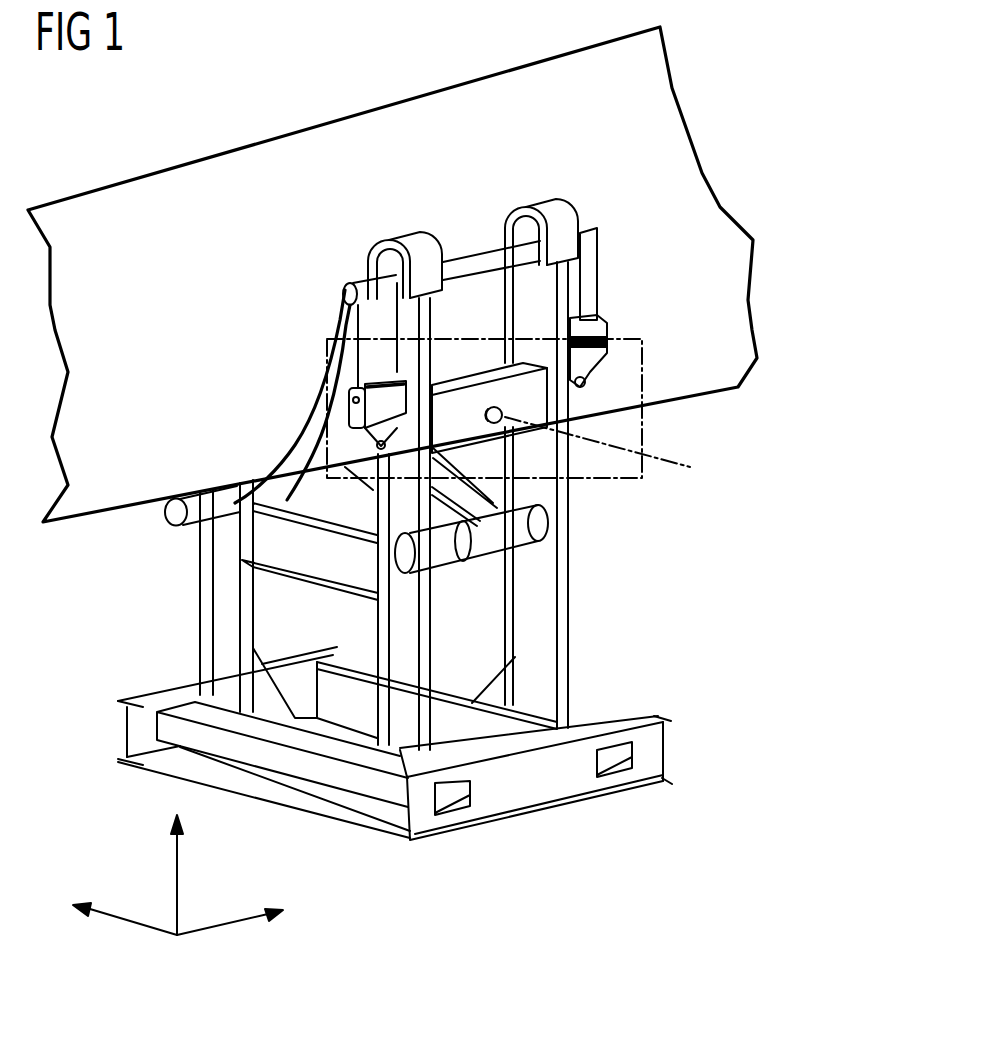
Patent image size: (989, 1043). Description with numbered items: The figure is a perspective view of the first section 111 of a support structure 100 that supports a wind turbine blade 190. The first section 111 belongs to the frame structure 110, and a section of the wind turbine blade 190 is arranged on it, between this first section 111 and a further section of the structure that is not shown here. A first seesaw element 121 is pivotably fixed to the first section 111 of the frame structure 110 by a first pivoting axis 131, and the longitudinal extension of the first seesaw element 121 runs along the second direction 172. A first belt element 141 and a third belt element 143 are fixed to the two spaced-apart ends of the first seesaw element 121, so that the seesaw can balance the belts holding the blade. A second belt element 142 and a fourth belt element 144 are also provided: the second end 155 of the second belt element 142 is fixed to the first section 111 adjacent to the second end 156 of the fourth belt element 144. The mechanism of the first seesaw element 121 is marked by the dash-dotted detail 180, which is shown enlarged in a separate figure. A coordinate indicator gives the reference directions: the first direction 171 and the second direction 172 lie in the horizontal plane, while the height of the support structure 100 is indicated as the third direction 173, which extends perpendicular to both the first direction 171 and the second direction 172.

The support structure 100 is at (367, 536).
The frame structure 110 is at (430, 660).
The first section 111 is at (553, 823).
The first seesaw element 121 is at (438, 385).
The first pivoting axis 131 is at (675, 465).
The first belt element 141 is at (368, 278).
The second belt element 142 is at (372, 492).
The third belt element 143 is at (590, 228).
The fourth belt element 144 is at (496, 494).
The second end of the second belt element 155 is at (440, 556).
The second end of the fourth belt element 156 is at (548, 530).
The first direction 171 is at (135, 922).
The second direction 172 is at (217, 928).
The third direction 173 is at (178, 893).
The detail 180 is at (630, 339).
The wind turbine blade 190 is at (333, 128).